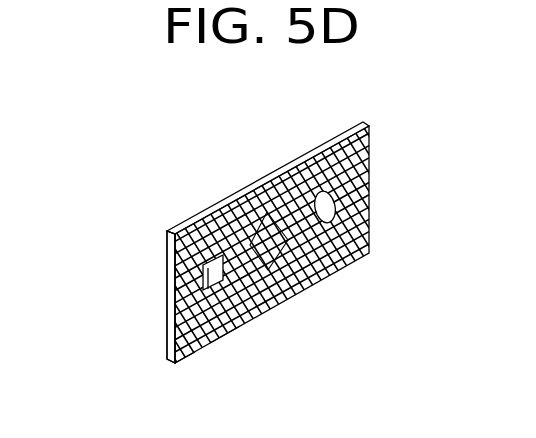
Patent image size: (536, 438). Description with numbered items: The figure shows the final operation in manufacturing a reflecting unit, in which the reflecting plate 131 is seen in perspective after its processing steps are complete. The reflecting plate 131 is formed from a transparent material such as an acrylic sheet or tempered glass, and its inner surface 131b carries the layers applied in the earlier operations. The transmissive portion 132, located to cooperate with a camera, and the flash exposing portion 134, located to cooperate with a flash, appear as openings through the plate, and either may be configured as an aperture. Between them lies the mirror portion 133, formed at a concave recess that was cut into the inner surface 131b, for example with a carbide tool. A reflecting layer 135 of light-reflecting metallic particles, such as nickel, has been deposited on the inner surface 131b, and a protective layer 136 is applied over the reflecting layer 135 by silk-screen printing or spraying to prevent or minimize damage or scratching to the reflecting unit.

The reflecting plate 131 is at (145, 317).
The inner surface 131b is at (167, 259).
The transmissive portion 132 is at (323, 205).
The mirror portion 133 is at (266, 212).
The flash exposing portion 134 is at (211, 272).
The reflecting layer 135 is at (184, 358).
The protective layer 136 is at (223, 334).